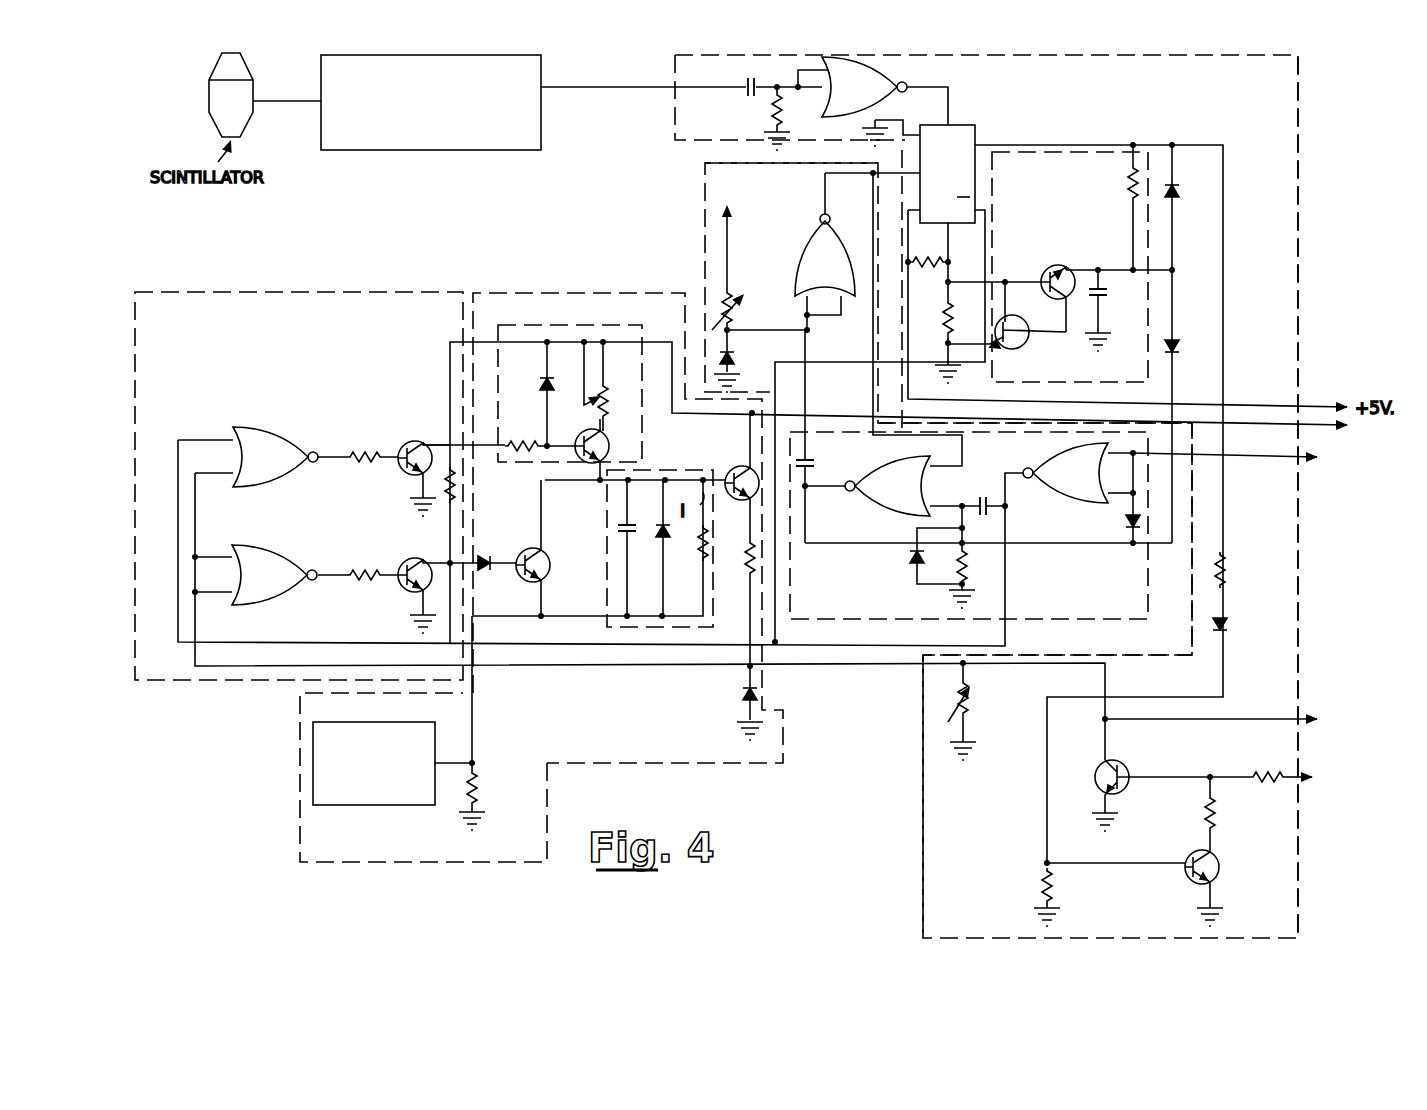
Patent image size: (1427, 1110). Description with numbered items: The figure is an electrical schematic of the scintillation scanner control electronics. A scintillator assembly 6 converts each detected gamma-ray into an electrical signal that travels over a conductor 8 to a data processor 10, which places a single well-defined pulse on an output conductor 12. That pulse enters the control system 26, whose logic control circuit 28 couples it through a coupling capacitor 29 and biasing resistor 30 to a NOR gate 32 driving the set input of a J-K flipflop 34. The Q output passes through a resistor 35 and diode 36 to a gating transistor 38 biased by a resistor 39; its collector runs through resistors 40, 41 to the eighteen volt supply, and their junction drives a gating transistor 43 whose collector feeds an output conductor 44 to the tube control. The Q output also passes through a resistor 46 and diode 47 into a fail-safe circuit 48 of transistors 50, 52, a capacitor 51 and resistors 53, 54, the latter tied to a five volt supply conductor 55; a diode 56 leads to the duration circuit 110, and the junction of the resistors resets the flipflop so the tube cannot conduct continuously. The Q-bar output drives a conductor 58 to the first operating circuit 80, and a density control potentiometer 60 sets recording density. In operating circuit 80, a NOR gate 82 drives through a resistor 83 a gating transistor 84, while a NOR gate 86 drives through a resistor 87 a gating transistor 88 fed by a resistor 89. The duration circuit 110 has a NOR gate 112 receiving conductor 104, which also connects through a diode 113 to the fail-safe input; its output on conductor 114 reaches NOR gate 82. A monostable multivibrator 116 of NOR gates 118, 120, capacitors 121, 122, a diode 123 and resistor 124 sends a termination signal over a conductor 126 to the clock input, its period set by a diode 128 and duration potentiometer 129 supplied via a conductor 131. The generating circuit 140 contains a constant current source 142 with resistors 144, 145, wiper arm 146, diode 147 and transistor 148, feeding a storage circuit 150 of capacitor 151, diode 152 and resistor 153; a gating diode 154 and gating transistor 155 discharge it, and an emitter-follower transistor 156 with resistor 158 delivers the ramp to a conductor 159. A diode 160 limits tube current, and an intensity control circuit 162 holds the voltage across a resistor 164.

The scintillator assembly 6 is at (206, 100).
The conductor 8 is at (305, 100).
The data processor 10 is at (545, 76).
The output conductor 12 is at (638, 88).
The control system 26 is at (1345, 228).
The logic control circuit 28 is at (1305, 316).
The coupling capacitor 29 is at (762, 84).
The biasing resistor 30 is at (772, 110).
The NOR gate 32 is at (900, 75).
The J-K flipflop 34 is at (975, 132).
The resistor 35 is at (1232, 570).
The diode 36 is at (1232, 628).
The gating transistor 38 is at (1218, 864).
The resistor 39 is at (1040, 890).
The resistor 40 is at (1205, 816).
The resistor 41 is at (1282, 770).
The gating transistor 43 is at (1122, 770).
The output conductor 44 is at (1284, 718).
The resistor 46 is at (1125, 190).
The diode 47 is at (1178, 196).
The fail-safe circuit 48 is at (1108, 391).
The transistor 50 is at (1050, 268).
The capacitor 51 is at (1108, 300).
The transistor 52 is at (1022, 348).
The resistor 53 is at (952, 322).
The resistor 54 is at (928, 272).
The +5 volt supply conductor 55 is at (1235, 404).
The diode 56 is at (1176, 340).
The conductor 58 is at (862, 362).
The adjustable density control potentiometer 60 is at (972, 706).
The first operating circuit 80 is at (378, 280).
The NOR gate 82 is at (258, 428).
The resistor 83 is at (370, 450).
The gating transistor 84 is at (424, 442).
The NOR gate 86 is at (278, 548).
The resistor 87 is at (370, 572).
The gating transistor 88 is at (402, 590).
The resistor 89 is at (446, 505).
The conductor 104 is at (1286, 455).
The duration circuit 110 is at (1135, 630).
The NOR gate 112 is at (1045, 445).
The diode 113 is at (1125, 526).
The conductor 114 is at (1003, 592).
The monostable multivibrator 116 is at (848, 550).
The NOR gate 118 is at (800, 252).
The NOR gate 120 is at (886, 458).
The capacitor 121 is at (810, 452).
The capacitor 122 is at (982, 500).
The diode 123 is at (910, 562).
The resistor 124 is at (966, 556).
The conductor 126 is at (888, 166).
The diode 128 is at (734, 362).
The adjustable duration control potentiometer 129 is at (734, 300).
The supply conductor 131 is at (728, 212).
The generating circuit 140 is at (628, 282).
The constant current source 142 is at (624, 318).
The resistor 144 is at (530, 424).
The resistor 145 is at (612, 402).
The movable wiper arm 146 is at (585, 384).
The diode 147 is at (542, 386).
The transistor 148 is at (596, 434).
The storage circuit 150 is at (658, 466).
The capacitor 151 is at (643, 548).
The diode 152 is at (660, 512).
The resistor 153 is at (680, 548).
The gating diode 154 is at (480, 560).
The gating transistor 155 is at (543, 562).
The transistor 156 is at (742, 466).
The resistor 158 is at (750, 578).
The conductor 159 is at (912, 668).
The diode 160 is at (744, 694).
The intensity control circuit 162 is at (396, 805).
The resistor 164 is at (484, 796).